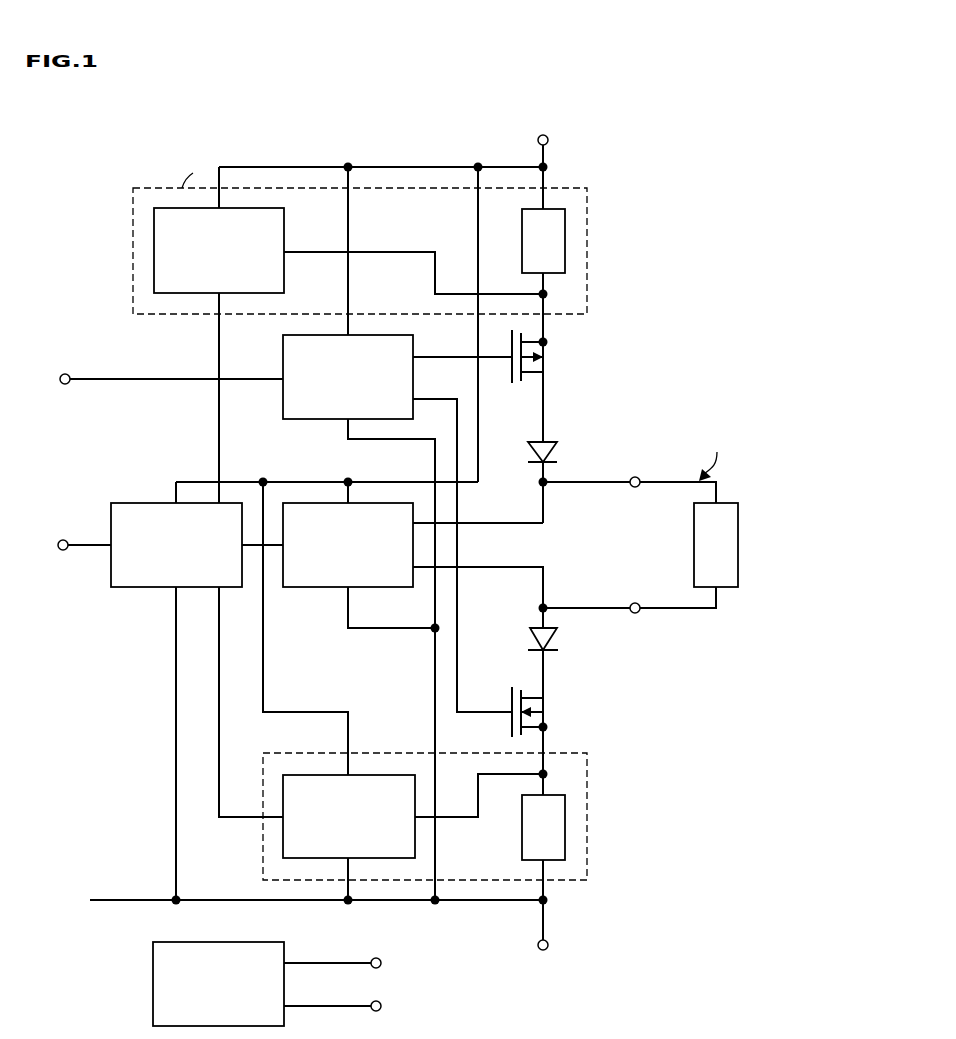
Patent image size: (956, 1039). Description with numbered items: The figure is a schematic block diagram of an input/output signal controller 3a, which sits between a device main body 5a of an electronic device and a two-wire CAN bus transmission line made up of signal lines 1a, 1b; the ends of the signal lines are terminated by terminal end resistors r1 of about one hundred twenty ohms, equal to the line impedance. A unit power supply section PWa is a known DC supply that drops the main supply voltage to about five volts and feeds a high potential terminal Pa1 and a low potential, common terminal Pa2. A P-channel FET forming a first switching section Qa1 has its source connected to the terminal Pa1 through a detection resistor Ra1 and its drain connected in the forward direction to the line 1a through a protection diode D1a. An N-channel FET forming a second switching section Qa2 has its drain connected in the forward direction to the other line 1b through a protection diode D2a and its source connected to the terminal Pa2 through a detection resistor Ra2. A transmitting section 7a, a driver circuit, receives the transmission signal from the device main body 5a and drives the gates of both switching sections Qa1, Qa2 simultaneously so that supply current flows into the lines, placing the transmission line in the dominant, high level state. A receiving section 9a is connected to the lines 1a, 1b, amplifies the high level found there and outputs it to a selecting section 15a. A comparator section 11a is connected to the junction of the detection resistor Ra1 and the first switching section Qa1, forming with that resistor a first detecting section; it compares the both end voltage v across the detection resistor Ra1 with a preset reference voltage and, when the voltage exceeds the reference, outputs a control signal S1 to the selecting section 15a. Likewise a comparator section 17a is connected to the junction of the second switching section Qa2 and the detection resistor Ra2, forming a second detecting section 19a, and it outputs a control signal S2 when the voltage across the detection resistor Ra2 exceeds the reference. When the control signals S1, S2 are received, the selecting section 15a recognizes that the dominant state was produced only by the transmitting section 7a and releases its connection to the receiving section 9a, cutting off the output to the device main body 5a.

The input/output signal controller 3a is at (425, 542).
The comparator section 11a is at (286, 236).
The transmitting section 7a is at (313, 410).
The receiving section 9a is at (325, 590).
The selecting section 15a is at (153, 580).
The second detecting section 19a is at (375, 753).
The comparator section 17a is at (288, 833).
The device main body 5a is at (159, 462).
The unit power supply section PWa is at (167, 1012).
The detection resistor Ra1 is at (555, 248).
The detection resistor Ra2 is at (560, 833).
The first switching section Qa1 is at (650, 356).
The second switching section Qa2 is at (663, 712).
The protection diode D1a is at (548, 443).
The protection diode D2a is at (545, 637).
The terminal Pa1 is at (562, 135).
The terminal Pa2 is at (591, 941).
The control signal S1 is at (234, 335).
The control signal S2 is at (251, 702).
The both end voltage v is at (555, 774).
The signal line 1a is at (670, 485).
The signal line 1b is at (667, 606).
The terminal end resistor r1 is at (723, 577).